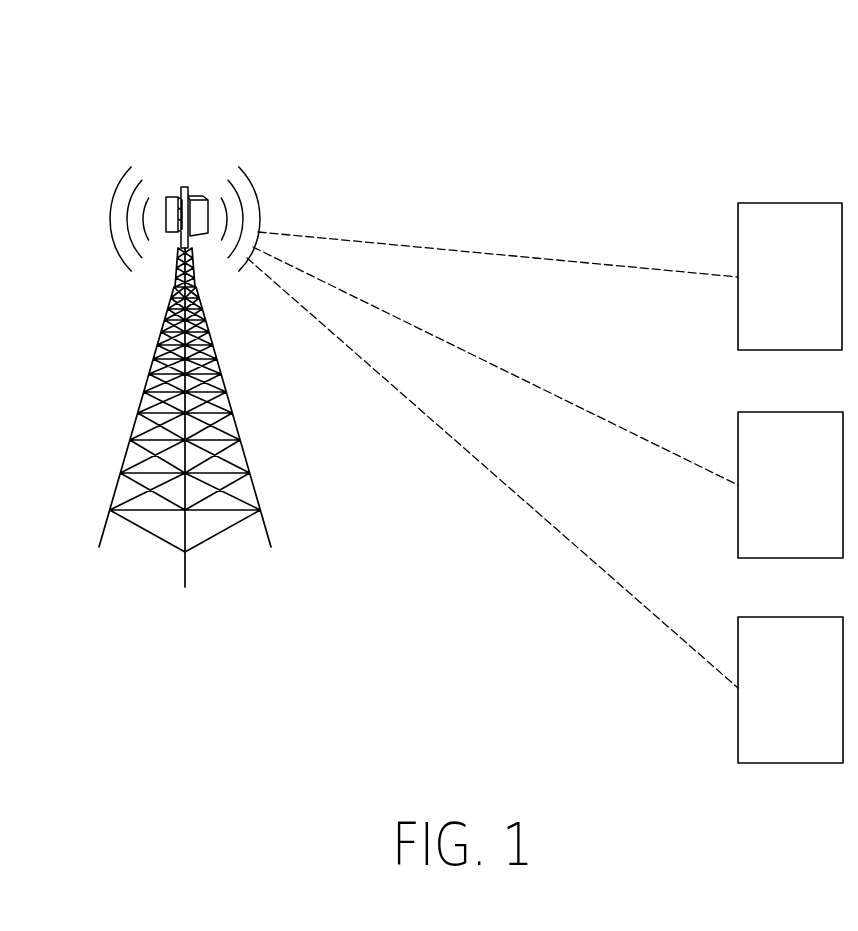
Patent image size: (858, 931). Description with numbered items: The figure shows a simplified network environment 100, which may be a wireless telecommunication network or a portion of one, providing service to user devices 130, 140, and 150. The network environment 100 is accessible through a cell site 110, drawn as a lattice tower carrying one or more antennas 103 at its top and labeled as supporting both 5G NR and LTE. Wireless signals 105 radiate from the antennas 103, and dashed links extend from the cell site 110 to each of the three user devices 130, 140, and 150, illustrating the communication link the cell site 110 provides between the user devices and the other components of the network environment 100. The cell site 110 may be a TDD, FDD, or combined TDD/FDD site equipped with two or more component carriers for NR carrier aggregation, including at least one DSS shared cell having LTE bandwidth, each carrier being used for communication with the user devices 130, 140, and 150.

The network environment 100 is at (641, 70).
The antenna 103 is at (190, 195).
The wireless signals 105 is at (253, 185).
The cell site 110 is at (162, 331).
The user device 130 is at (790, 276).
The user device 140 is at (790, 485).
The user device 150 is at (790, 690).